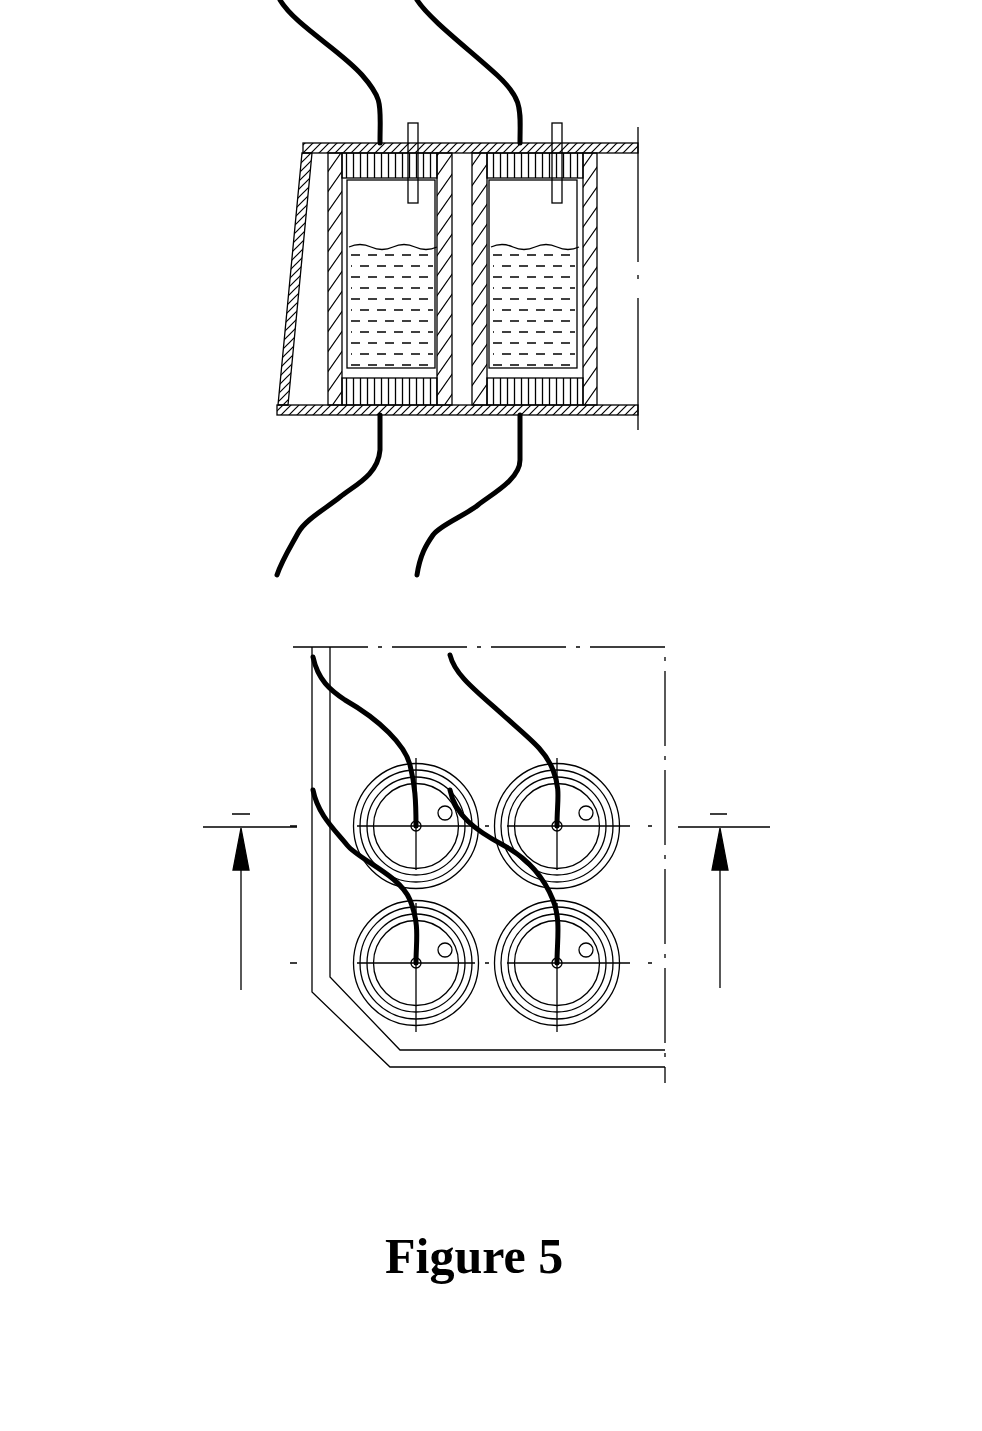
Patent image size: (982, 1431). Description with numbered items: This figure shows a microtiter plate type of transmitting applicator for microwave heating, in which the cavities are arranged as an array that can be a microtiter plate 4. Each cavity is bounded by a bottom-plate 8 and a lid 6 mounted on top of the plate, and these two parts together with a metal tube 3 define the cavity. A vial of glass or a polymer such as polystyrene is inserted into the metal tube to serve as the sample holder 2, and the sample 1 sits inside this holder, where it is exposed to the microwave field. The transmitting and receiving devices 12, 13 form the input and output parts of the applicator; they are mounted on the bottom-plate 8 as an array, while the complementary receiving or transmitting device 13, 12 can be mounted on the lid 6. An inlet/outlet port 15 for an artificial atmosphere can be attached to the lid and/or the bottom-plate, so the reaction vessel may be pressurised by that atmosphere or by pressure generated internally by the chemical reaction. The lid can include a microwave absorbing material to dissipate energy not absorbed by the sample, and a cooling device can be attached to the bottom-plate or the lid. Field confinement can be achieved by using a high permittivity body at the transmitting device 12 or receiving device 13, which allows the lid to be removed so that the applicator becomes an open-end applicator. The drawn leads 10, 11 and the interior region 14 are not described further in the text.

The sample 1 is at (558, 318).
The sample holder 2 is at (340, 350).
The metal tube 3 is at (337, 295).
The microtiter plate 4 is at (573, 700).
The lid 6 is at (450, 143).
The bottom-plate 8 is at (614, 415).
The lower lead wire 10 is at (308, 518).
The upper lead wire 11 is at (310, 40).
The transmitting device 12 is at (540, 415).
The receiving device 13 is at (568, 167).
The cell interior space 14 is at (553, 221).
The inlet/outlet port 15 is at (565, 135).